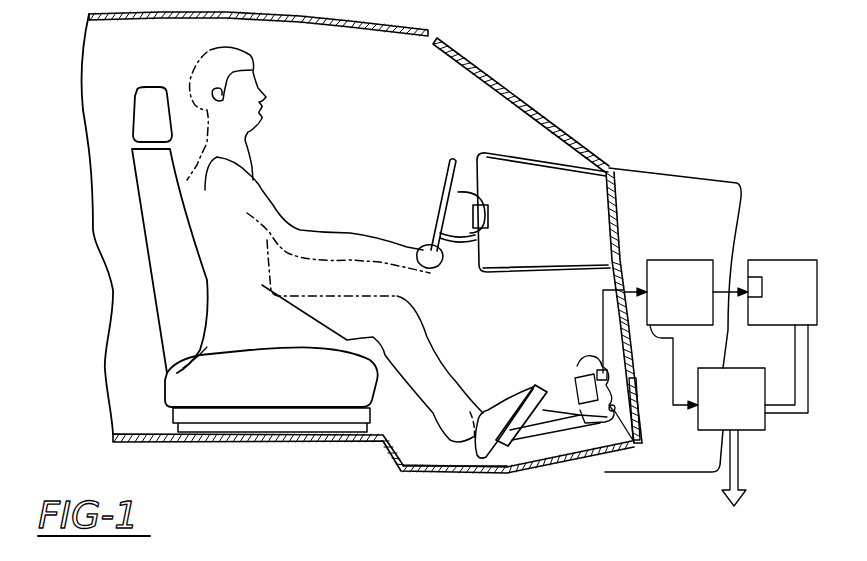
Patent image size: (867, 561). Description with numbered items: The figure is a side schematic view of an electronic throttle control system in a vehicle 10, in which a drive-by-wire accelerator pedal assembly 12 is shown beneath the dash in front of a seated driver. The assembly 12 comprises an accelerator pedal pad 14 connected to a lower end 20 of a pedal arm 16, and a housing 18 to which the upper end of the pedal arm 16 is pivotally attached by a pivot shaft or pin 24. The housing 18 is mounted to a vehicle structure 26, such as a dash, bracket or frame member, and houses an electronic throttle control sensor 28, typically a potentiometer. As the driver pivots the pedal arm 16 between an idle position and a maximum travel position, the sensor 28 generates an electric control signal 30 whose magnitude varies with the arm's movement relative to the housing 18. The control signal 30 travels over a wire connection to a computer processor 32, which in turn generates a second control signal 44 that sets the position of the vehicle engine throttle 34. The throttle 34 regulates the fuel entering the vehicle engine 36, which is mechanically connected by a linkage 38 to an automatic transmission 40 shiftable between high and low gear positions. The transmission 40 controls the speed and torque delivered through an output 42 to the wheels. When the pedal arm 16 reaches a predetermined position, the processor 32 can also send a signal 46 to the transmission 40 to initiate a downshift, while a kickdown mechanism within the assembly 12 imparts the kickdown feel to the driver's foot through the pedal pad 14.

The vehicle 10 is at (597, 125).
The electronic throttle control accelerator pedal assembly 12 is at (587, 344).
The accelerator pedal pad 14 is at (505, 468).
The pedal arm 16 is at (580, 418).
The housing 18 is at (575, 390).
The lower end 20 is at (537, 432).
The pivot shaft or pin 24 is at (639, 447).
The vehicle structure 26 is at (638, 408).
The electronic throttle control sensor 28 is at (577, 365).
The electric control signal 30 is at (608, 268).
The computer processor 32 is at (612, 423).
The vehicle engine throttle 34 is at (757, 287).
The vehicle engine 36 is at (782, 292).
The linkage 38 is at (800, 415).
The automatic transmission 40 is at (731, 399).
The output 42 is at (740, 478).
The second control signal 44 is at (733, 290).
The signal 46 is at (623, 308).